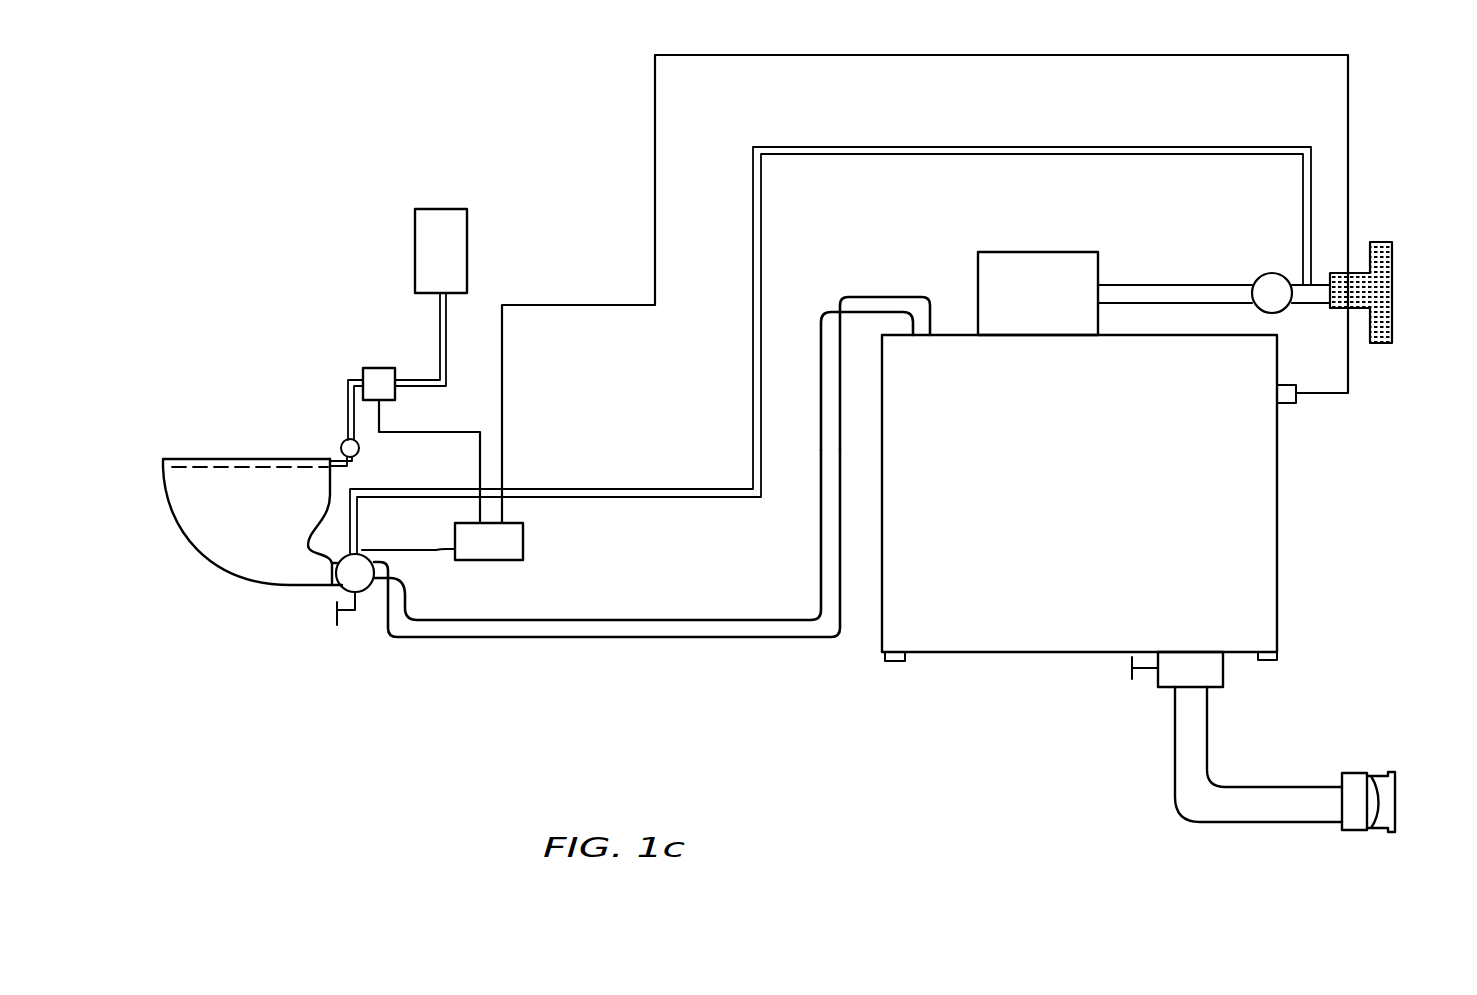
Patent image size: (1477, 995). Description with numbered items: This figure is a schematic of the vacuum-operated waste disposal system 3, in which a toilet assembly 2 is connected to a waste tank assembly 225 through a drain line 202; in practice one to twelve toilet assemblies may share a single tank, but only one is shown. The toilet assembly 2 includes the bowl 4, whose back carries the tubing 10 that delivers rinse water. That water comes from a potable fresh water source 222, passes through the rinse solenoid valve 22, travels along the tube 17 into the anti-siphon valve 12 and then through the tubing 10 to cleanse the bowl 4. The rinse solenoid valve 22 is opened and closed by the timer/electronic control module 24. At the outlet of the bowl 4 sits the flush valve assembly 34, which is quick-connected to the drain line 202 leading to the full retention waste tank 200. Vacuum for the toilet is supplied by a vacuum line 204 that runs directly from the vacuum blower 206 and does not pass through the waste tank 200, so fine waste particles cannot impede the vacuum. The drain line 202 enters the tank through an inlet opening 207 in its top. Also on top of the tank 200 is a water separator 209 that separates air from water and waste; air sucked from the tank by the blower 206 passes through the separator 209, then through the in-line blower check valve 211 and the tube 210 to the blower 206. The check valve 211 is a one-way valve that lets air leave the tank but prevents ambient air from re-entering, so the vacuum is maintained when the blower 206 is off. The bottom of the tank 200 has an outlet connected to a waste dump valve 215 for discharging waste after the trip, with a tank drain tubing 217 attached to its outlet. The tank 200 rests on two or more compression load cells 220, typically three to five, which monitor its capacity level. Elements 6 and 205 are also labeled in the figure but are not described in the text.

The toilet assembly 2 is at (214, 436).
The waste disposal system 3 is at (727, 42).
The bowl 4 is at (203, 535).
The toilet rim / seat 6 is at (163, 468).
The tubing 10 is at (340, 457).
The anti-siphon valve 12 is at (341, 440).
The tube 17 is at (437, 320).
The rinse solenoid valve 22 is at (368, 368).
The timer/electronic control module 24 is at (523, 545).
The flush valve assembly 34 is at (338, 590).
The waste tank 200 is at (1278, 478).
The drain line 202 is at (583, 640).
The vacuum line 204 is at (840, 147).
The tank connector 205 is at (1297, 401).
The vacuum blower 206 is at (1381, 241).
The inlet opening 207 is at (936, 333).
The water separator 209 is at (1056, 252).
The tube 210 is at (1170, 285).
The in-line blower check valve 211 is at (1270, 273).
The waste dump valve 215 is at (1160, 690).
The tank drain tubing 217 is at (1288, 787).
The compression load cells 220 is at (893, 663).
The potable fresh water source 222 is at (438, 209).
The waste tank assembly 225 is at (980, 694).